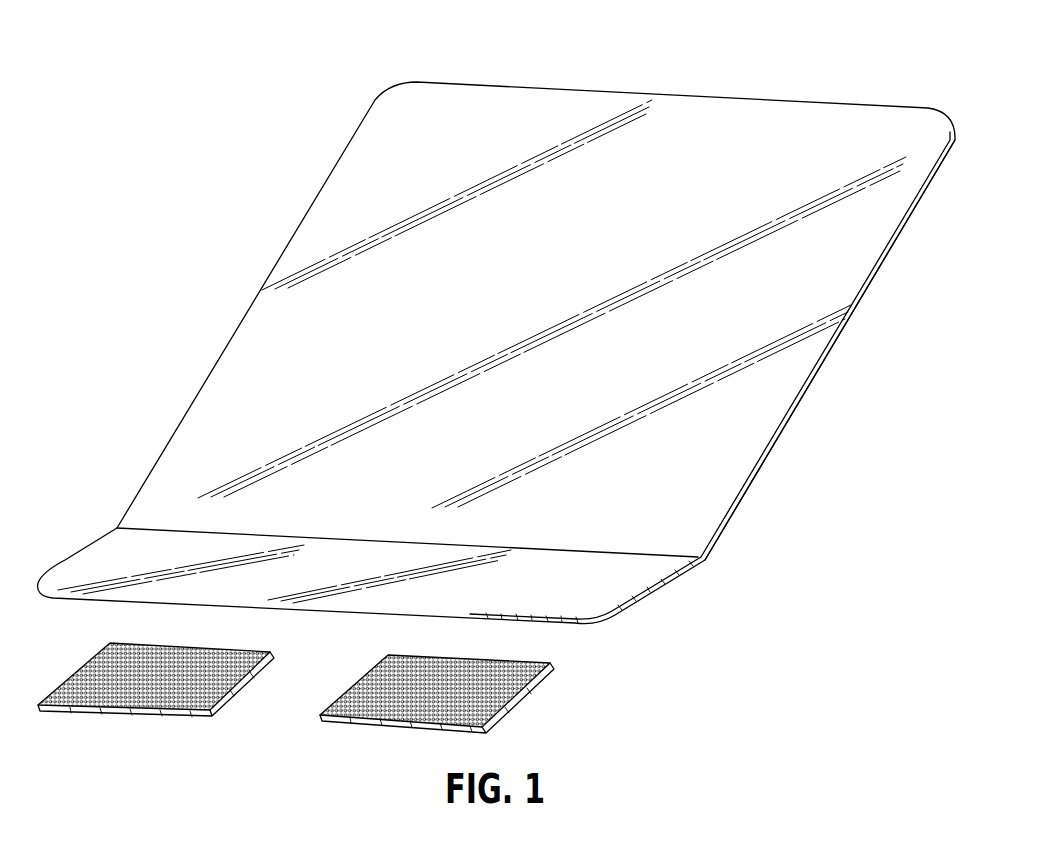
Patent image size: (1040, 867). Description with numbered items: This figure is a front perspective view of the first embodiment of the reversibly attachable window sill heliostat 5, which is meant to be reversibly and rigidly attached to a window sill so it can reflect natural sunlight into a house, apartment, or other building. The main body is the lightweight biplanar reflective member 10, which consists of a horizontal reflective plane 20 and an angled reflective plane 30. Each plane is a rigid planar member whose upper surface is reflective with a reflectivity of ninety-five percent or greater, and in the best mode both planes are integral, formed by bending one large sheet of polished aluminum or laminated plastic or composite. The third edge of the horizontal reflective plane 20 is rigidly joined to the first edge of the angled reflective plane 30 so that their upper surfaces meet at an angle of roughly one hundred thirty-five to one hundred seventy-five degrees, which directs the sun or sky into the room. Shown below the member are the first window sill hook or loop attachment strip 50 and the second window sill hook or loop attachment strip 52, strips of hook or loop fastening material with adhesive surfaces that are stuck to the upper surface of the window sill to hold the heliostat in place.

The reversibly attachable window sill heliostat 5 is at (189, 80).
The lightweight biplanar reflective member 10 is at (245, 313).
The horizontal reflective plane 20 is at (667, 589).
The angled reflective plane 30 is at (858, 307).
The first window sill hook or loop attachment strip 50 is at (124, 714).
The second window sill hook or loop attachment strip 52 is at (378, 726).